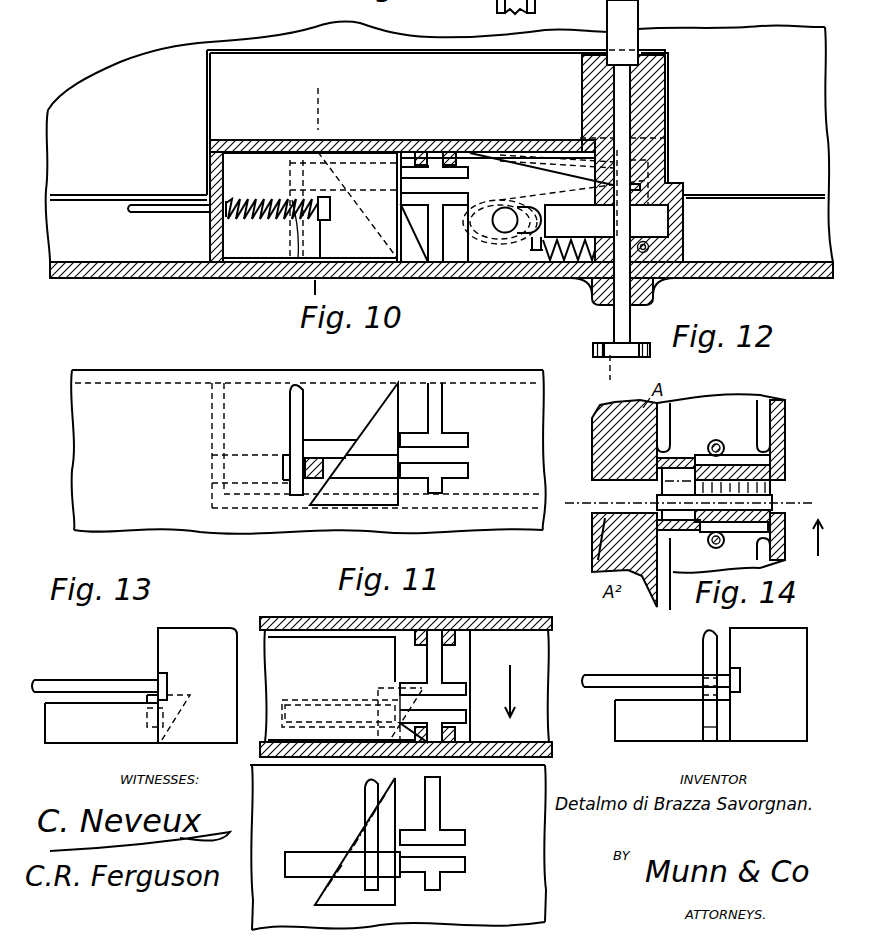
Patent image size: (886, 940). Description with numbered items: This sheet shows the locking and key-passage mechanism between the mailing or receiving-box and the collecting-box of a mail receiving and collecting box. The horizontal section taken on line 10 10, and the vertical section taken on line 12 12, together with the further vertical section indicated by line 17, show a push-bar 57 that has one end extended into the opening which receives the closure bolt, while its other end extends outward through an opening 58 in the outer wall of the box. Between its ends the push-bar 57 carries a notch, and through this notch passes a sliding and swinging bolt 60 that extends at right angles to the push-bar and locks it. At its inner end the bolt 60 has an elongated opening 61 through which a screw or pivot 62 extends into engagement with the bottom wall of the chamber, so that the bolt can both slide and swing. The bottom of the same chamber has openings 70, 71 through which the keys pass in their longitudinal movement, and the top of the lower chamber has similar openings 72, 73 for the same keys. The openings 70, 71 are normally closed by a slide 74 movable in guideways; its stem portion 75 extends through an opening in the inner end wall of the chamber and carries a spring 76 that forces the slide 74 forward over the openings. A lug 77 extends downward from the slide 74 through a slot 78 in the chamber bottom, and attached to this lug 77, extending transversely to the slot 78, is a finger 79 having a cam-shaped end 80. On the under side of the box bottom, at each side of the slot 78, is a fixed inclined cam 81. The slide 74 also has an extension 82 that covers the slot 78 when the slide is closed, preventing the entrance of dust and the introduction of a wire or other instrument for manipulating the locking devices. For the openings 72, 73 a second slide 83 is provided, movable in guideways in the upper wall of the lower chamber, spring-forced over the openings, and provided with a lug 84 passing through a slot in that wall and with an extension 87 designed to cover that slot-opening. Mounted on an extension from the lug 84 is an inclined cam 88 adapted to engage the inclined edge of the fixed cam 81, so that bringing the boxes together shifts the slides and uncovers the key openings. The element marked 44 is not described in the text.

In FIG. 14, the section line 10 10 is at (696, 505).
In FIG. 10, the section line 12 12 is at (338, 120).
In FIG. 12, the section line 17 is at (623, 365).
In FIG. 10, the chamber partition 44 is at (397, 213).
In FIG. 12, the push-bar 57 is at (654, 299).
In FIG. 12, the opening in outer wall 58 is at (612, 282).
In FIG. 10, the sliding and swinging bolt 60 is at (560, 213).
In FIG. 10, the elongated opening 61 is at (512, 209).
In FIG. 10, the screw or pivot 62 is at (513, 210).
In FIG. 11, the opening in chamber bottom 70 is at (469, 472).
In FIG. 13, the opening in chamber bottom 70 is at (466, 868).
In FIG. 11, the opening in chamber bottom 71 is at (468, 443).
In FIG. 13, the opening in chamber bottom 71 is at (466, 840).
In FIG. 13, the opening in chamber top 72 is at (455, 718).
In FIG. 13, the opening in chamber top 73 is at (440, 663).
In FIG. 14, the slide 74 is at (760, 460).
In FIG. 13, the slide 74 is at (778, 743).
In FIG. 10, the stem portion 75 is at (169, 216).
In FIG. 13, the stem portion 75 is at (654, 676).
In FIG. 10, the spring 76 is at (278, 227).
In FIG. 14, the lug 77 is at (662, 485).
In FIG. 13, the slot 78 is at (300, 856).
In FIG. 11, the finger 79 is at (290, 412).
In FIG. 13, the finger 79 is at (365, 794).
In FIG. 11, the cam-shaped end 80 is at (298, 390).
In FIG. 13, the cam-shaped end 80 is at (372, 792).
In FIG. 11, the inclined cam 81 is at (372, 421).
In FIG. 14, the inclined cam 81 is at (773, 489).
In FIG. 13, the inclined cam 81 is at (356, 850).
In FIG. 13, the extension 82 is at (636, 743).
In FIG. 14, the slide 83 is at (733, 532).
In FIG. 13, the slide 83 is at (213, 633).
In FIG. 11, the lug 84 is at (315, 457).
In FIG. 13, the lug 84 is at (145, 718).
In FIG. 13, the extension 87 is at (67, 743).
In FIG. 11, the inclined cam 88 is at (344, 440).
In FIG. 13, the inclined cam 88 is at (172, 725).